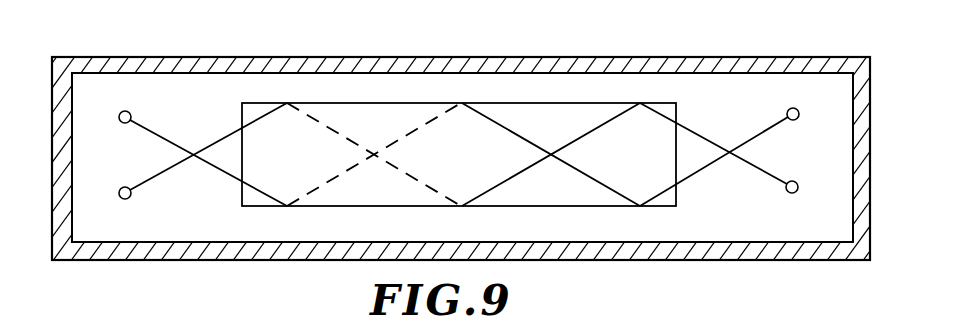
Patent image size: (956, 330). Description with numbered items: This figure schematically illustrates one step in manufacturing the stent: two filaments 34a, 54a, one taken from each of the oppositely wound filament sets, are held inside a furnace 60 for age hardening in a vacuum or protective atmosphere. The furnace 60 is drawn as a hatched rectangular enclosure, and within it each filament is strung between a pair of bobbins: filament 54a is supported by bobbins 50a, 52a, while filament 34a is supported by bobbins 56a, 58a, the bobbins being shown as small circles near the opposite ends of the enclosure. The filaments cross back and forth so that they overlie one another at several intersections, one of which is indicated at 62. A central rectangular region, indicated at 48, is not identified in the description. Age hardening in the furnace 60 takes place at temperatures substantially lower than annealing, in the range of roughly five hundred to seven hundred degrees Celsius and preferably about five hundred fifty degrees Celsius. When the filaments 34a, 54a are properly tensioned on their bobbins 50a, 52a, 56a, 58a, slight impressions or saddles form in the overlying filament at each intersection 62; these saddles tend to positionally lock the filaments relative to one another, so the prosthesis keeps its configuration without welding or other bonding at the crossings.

The furnace 60 is at (131, 251).
The sensor core region 48 is at (378, 125).
The bobbin 56a is at (127, 111).
The bobbin 50a is at (126, 199).
The filament 54a is at (503, 125).
The intersection 62 is at (552, 154).
The filament 34a is at (707, 143).
The bobbin 58a is at (790, 109).
The bobbin 52a is at (791, 194).